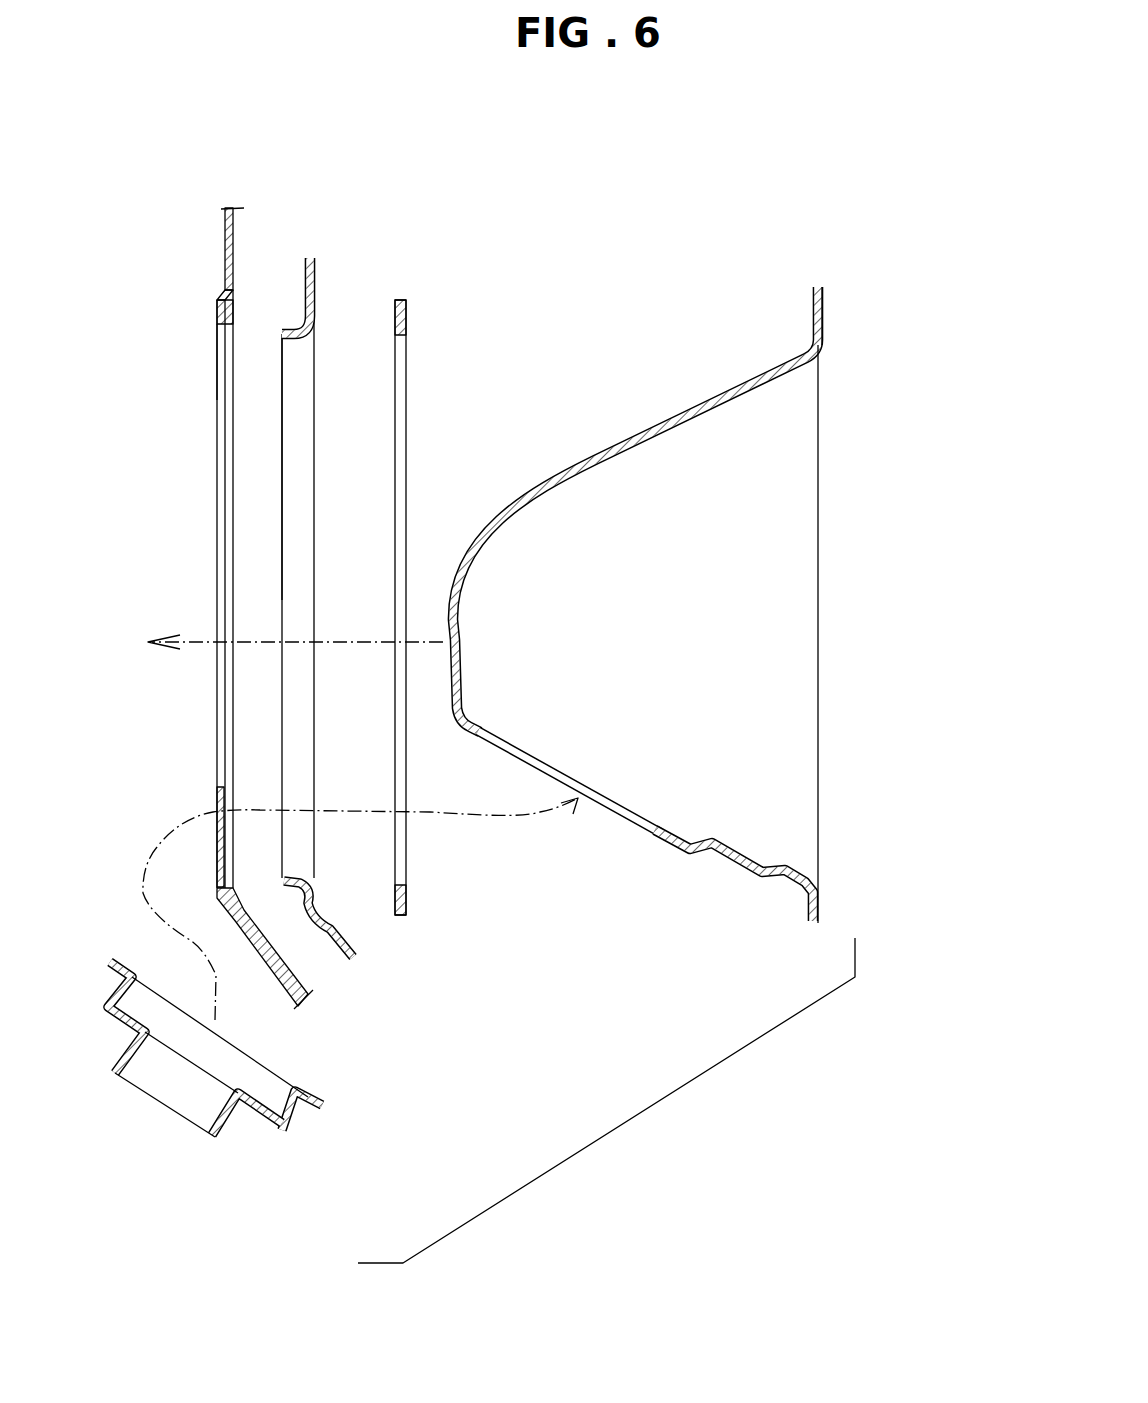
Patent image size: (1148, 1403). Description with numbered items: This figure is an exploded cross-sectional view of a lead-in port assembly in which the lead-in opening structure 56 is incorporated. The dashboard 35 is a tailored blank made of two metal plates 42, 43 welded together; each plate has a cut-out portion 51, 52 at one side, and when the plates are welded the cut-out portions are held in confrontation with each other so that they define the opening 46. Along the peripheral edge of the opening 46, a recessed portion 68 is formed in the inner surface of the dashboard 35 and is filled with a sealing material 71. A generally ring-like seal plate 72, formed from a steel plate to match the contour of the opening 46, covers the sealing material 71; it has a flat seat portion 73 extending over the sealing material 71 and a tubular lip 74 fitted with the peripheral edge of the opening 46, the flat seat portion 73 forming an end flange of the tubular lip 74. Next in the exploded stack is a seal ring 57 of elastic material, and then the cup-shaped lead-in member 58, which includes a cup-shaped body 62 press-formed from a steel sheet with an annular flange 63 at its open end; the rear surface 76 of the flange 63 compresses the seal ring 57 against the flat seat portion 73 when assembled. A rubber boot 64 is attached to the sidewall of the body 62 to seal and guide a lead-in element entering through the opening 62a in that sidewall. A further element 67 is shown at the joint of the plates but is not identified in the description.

The dashboard 35 is at (273, 611).
The metal plate 42 is at (217, 717).
The metal plate 43 is at (300, 970).
The opening 46 is at (215, 314).
The cut-out portion 51 is at (217, 343).
The cut-out portion 52 is at (222, 861).
The lead-in opening structure 56 is at (431, 73).
The seal ring 57 is at (407, 873).
The cup-shaped lead-in member 58 is at (698, 556).
The cup-shaped body 62 is at (588, 460).
The opening 62a is at (660, 833).
The flange 63 is at (822, 301).
The rubber boot 64 is at (300, 1117).
The joint portion 67 is at (216, 322).
The recessed portion 68 is at (241, 336).
The sealing material 71 is at (234, 326).
The seal plate 72 is at (449, 126).
The flat seat portion 73 is at (313, 282).
The tubular lip 74 is at (282, 385).
The rear surface 76 is at (810, 313).